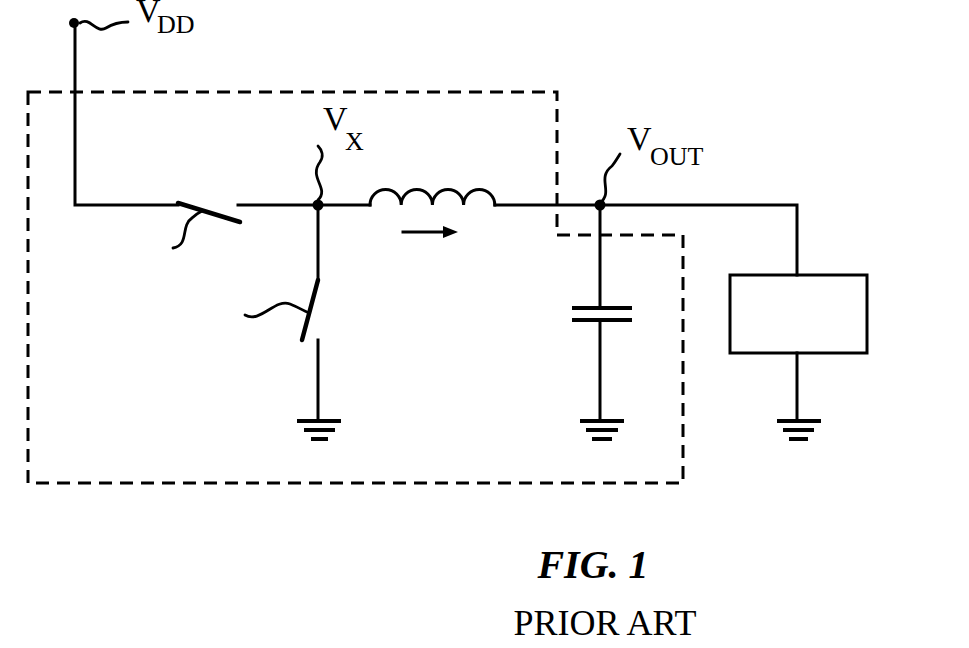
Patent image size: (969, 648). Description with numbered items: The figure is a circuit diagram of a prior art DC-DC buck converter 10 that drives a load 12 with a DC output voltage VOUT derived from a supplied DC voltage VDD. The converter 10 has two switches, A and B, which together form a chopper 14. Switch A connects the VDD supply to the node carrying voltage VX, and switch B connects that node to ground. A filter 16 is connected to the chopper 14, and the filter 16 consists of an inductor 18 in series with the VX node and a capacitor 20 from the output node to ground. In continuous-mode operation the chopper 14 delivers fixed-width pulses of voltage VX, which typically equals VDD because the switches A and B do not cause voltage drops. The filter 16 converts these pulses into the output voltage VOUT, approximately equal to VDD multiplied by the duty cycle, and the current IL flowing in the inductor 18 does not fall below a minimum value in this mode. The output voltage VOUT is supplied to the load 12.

The DC-DC buck converter 10 is at (558, 114).
The load 12 is at (835, 275).
The chopper 14 is at (199, 358).
The filter 16 is at (469, 328).
The inductor 18 is at (427, 190).
The capacitor 20 is at (588, 322).